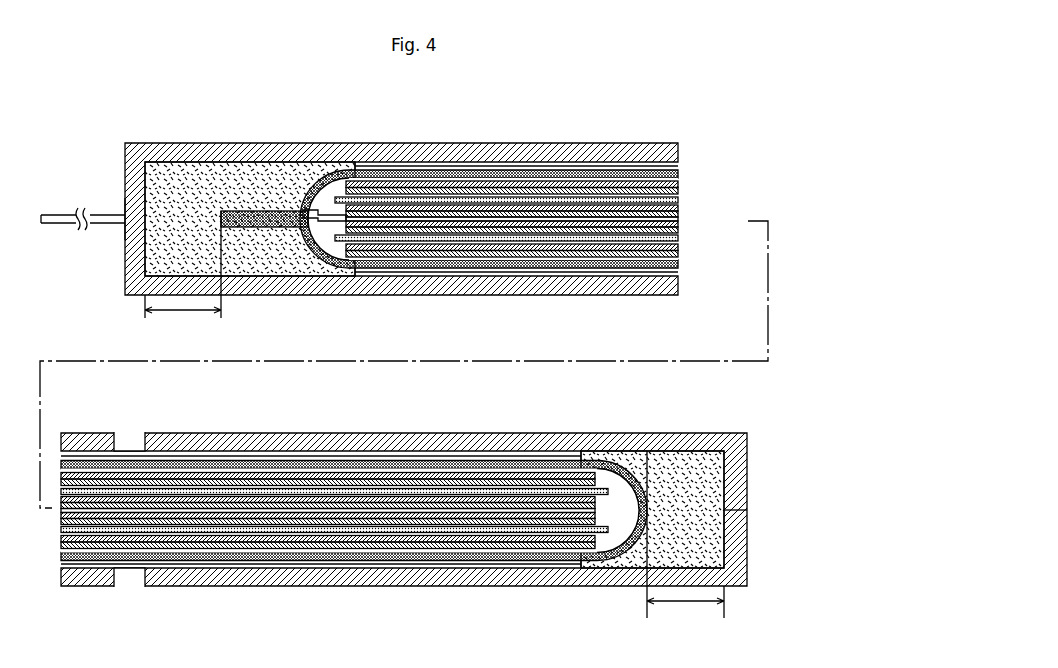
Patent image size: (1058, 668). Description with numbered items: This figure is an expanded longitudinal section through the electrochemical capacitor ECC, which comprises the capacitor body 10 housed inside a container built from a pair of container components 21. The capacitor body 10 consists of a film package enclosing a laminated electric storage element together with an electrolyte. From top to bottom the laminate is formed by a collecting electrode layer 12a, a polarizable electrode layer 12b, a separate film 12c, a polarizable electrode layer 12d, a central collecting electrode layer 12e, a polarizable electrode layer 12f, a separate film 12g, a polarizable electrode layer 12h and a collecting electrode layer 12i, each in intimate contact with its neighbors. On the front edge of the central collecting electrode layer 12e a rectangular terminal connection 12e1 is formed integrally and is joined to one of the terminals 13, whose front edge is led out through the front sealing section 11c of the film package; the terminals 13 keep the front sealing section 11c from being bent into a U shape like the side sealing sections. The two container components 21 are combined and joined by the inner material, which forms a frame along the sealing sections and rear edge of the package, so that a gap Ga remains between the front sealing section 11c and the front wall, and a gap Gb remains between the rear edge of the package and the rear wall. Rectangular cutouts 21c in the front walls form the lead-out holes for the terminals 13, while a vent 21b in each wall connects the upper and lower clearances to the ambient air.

The capacitor body 10 is at (416, 224).
The front sealing section 11c is at (265, 200).
The collecting electrode layer 12a is at (670, 176).
The polarizable electrode layer 12b is at (670, 182).
The separate film 12c is at (670, 192).
The polarizable electrode layer 12d is at (670, 203).
The collecting electrode layer 12e is at (670, 212).
The terminal connection 12e1 is at (320, 216).
The polarizable electrode layer 12f is at (670, 220).
The separate film 12g is at (670, 229).
The polarizable electrode layer 12h is at (670, 238).
The collecting electrode layer 12i is at (670, 245).
The terminal 13 is at (60, 210).
The container component 21 is at (433, 513).
The vent 21b is at (121, 432).
The rectangular cutout 21c is at (117, 193).
The electrochemical capacitor ECC is at (137, 135).
The gap Ga is at (183, 316).
The gap Gb is at (685, 605).